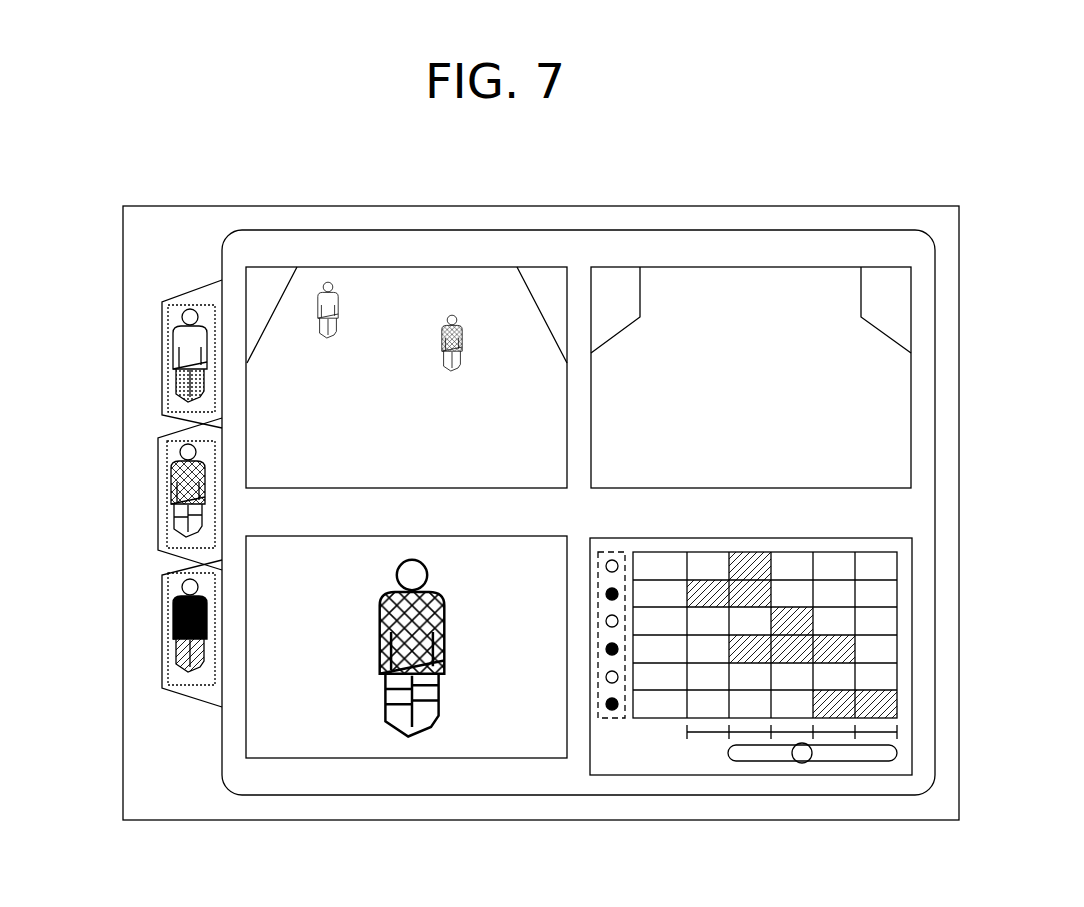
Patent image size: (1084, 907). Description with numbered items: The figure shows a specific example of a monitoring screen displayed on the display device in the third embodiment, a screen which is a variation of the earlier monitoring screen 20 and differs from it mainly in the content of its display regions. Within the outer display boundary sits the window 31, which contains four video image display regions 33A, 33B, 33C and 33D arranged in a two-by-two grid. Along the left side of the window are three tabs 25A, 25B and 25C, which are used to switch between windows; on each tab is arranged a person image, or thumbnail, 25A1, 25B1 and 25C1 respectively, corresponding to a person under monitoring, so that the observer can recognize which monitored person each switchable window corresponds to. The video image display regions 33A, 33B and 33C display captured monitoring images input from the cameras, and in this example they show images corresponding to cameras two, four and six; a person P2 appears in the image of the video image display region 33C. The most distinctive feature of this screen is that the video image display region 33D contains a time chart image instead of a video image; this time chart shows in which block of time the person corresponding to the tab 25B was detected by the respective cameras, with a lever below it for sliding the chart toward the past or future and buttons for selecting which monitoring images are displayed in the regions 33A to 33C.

The monitoring screen 20 is at (218, 206).
The display screen 31 is at (292, 230).
The video image display region 33A is at (402, 267).
The video image display region 33B is at (745, 267).
The video image display region 33C is at (406, 691).
The video image display region 33D is at (715, 775).
The tab 25A is at (133, 354).
The person image 25A1 is at (167, 333).
The tab 25B is at (133, 494).
The person image 25B1 is at (167, 468).
The tab 25C is at (133, 633).
The person image 25C1 is at (167, 602).
The person P2 is at (430, 727).